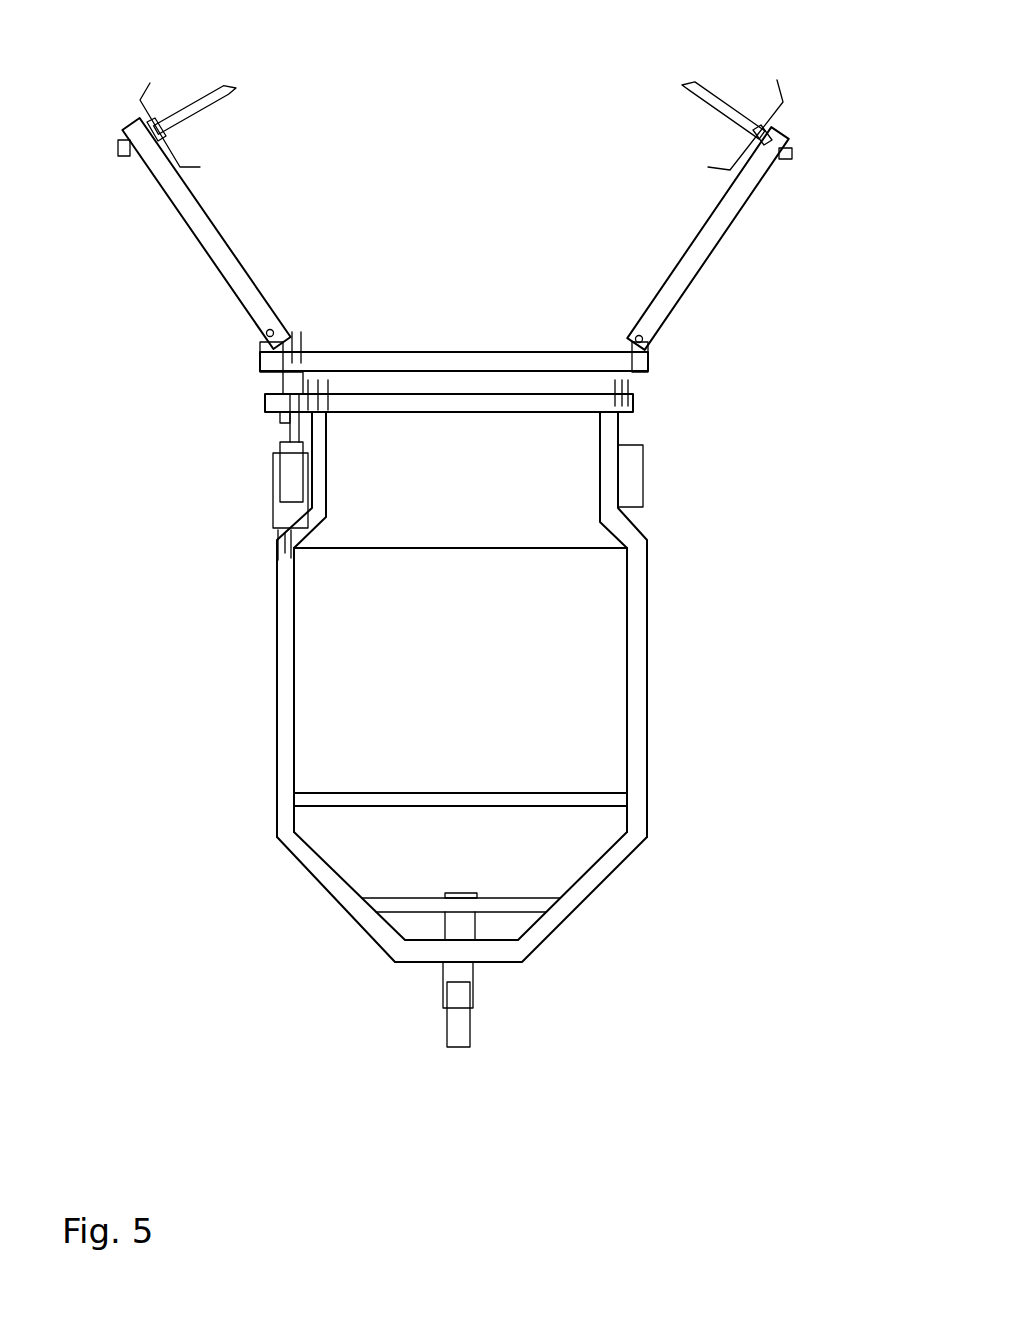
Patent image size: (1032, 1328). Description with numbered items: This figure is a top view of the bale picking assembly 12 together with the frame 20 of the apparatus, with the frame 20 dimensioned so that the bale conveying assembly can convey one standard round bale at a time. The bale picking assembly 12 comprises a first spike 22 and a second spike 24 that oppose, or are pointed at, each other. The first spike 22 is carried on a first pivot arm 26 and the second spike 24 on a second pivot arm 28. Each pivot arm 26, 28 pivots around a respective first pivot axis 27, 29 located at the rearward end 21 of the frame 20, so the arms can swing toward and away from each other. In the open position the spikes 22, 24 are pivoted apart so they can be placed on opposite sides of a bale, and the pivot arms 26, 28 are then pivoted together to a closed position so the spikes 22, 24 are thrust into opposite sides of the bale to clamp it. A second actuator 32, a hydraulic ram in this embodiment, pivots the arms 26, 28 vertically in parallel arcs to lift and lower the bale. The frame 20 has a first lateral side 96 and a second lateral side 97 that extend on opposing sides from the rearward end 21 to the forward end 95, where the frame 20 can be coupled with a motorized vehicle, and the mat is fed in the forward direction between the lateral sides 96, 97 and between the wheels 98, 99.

The bale picking assembly 12 is at (785, 226).
The frame 20 is at (650, 603).
The rearward end 21 is at (500, 360).
The first spike 22 is at (196, 100).
The second spike 24 is at (716, 93).
The first pivot arm 26 is at (173, 213).
The first pivot axis 27 is at (262, 337).
The second pivot arm 28 is at (706, 256).
The first pivot axis 29 is at (648, 343).
The second actuator 32 is at (290, 485).
The forward end 95 is at (595, 893).
The first lateral side 96 is at (277, 678).
The second lateral side 97 is at (652, 697).
The wheel 98 is at (271, 472).
The wheel 99 is at (644, 485).